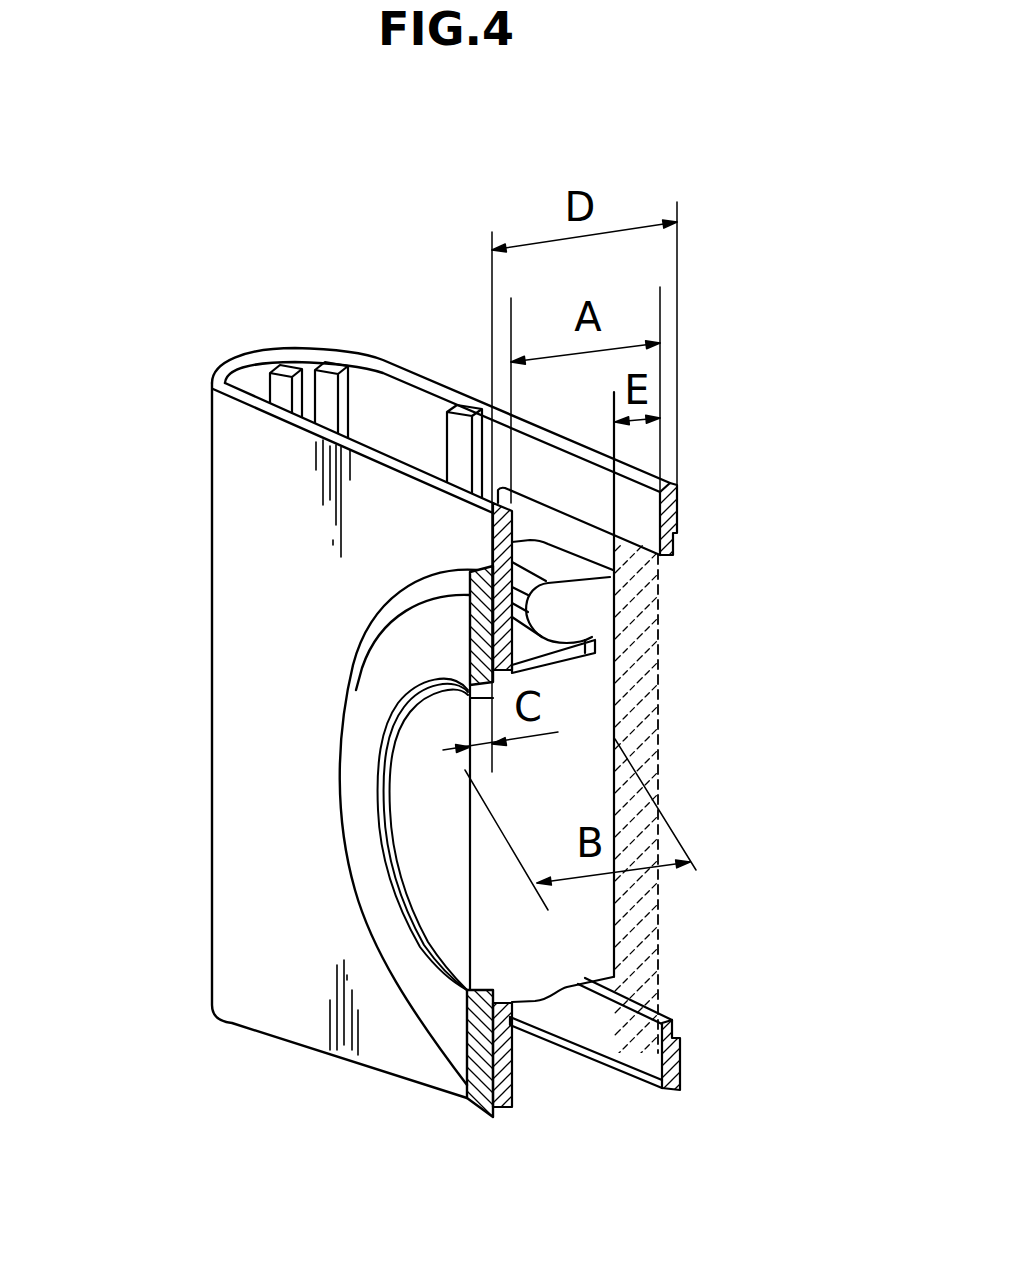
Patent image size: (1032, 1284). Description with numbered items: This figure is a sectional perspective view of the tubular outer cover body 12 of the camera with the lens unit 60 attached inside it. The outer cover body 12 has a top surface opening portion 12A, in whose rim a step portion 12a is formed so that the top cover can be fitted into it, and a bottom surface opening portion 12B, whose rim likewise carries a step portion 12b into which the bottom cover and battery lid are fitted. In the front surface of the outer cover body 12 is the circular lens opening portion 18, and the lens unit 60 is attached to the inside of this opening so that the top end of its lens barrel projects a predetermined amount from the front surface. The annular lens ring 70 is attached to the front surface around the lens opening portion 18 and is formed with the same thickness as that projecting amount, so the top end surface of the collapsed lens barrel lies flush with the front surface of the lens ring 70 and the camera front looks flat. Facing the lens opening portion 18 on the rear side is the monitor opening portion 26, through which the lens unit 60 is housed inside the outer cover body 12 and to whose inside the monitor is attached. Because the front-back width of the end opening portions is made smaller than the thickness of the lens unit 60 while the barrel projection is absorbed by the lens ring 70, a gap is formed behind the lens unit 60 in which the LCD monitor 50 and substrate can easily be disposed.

The outer cover body 12 is at (265, 756).
The top surface opening portion 12A is at (258, 392).
The step portion 12a is at (357, 362).
The bottom surface opening portion 12B is at (503, 1112).
The step portion 12b is at (642, 1082).
The lens opening portion 18 is at (445, 967).
The monitor opening portion 26 is at (664, 556).
The LCD monitor 50 is at (636, 956).
The lens unit 60 is at (593, 711).
The lens ring 70 is at (387, 942).